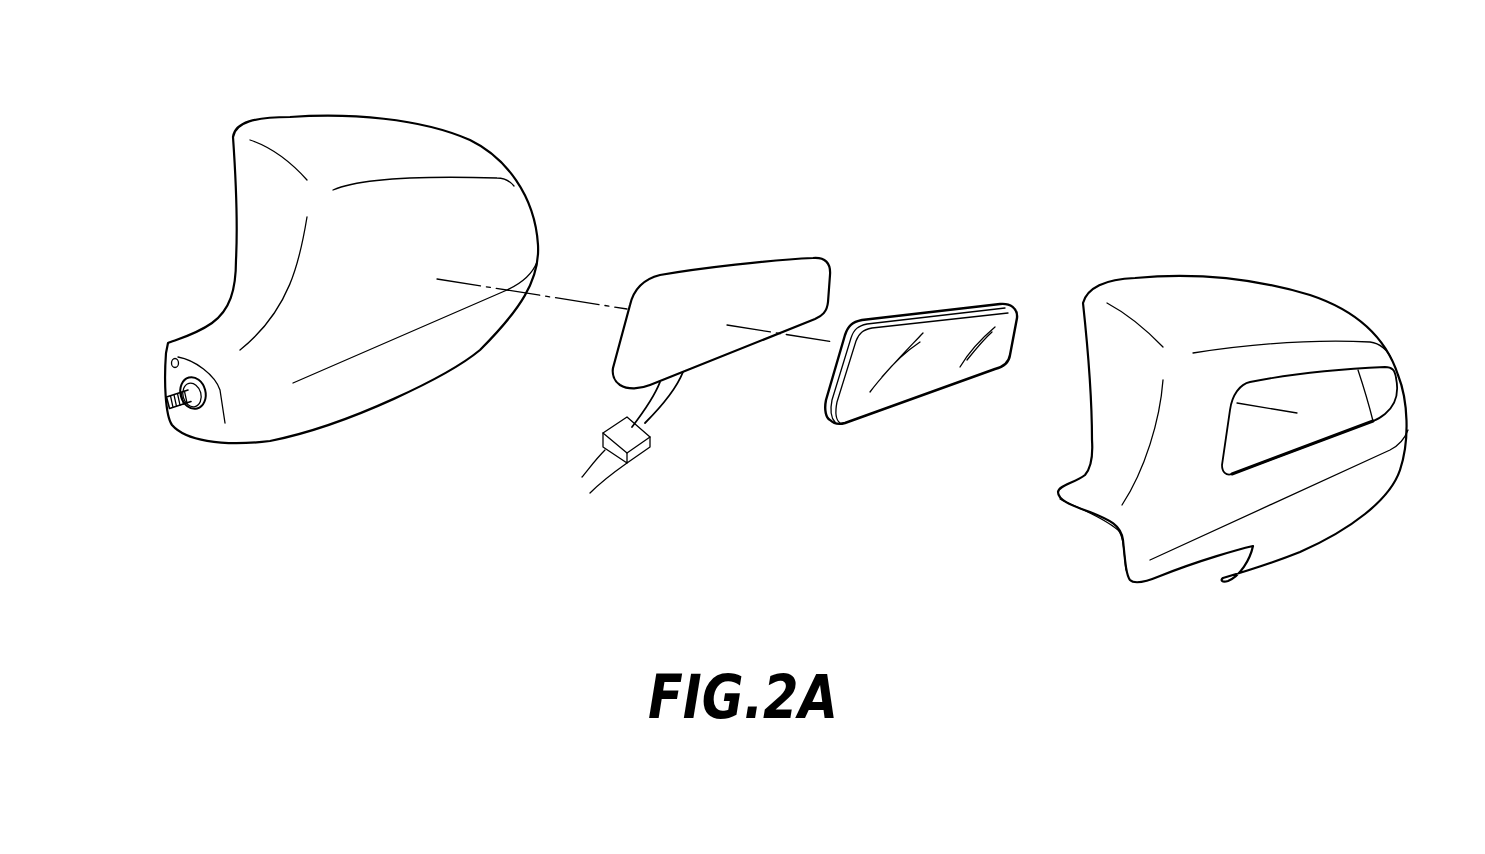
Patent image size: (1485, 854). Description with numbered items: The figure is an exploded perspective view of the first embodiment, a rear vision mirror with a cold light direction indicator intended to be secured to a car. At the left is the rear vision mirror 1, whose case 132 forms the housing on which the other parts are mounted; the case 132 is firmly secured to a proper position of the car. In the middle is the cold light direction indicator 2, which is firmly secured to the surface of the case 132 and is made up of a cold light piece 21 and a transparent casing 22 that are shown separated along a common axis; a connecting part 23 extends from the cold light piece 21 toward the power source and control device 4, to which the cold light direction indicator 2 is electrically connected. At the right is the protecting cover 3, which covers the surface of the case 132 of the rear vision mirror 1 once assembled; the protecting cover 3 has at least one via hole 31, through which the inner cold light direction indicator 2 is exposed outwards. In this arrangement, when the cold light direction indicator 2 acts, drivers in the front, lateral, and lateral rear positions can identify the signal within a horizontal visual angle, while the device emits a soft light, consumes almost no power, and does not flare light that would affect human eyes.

The rear vision mirror 1 is at (388, 117).
The case 132 is at (517, 180).
The cold light direction indicator 2 is at (925, 307).
The cold light piece 21 is at (712, 340).
The transparent casing 22 is at (913, 373).
The hinge arm 23 is at (667, 405).
The power source and control device 4 is at (613, 435).
The protecting cover 3 is at (1200, 277).
The via hole 31 is at (1398, 385).